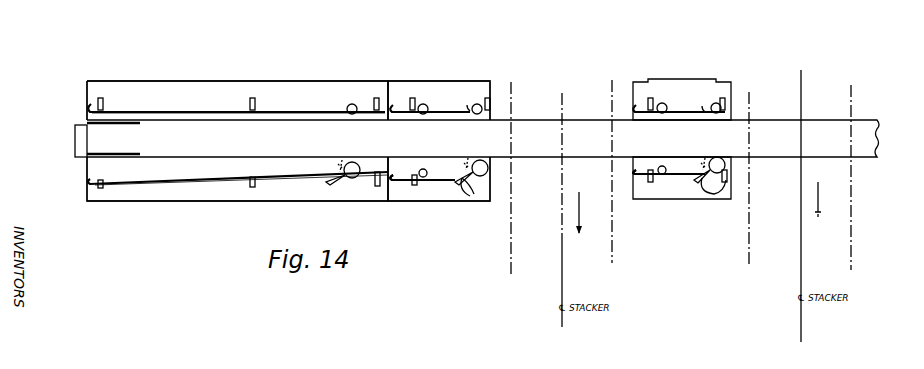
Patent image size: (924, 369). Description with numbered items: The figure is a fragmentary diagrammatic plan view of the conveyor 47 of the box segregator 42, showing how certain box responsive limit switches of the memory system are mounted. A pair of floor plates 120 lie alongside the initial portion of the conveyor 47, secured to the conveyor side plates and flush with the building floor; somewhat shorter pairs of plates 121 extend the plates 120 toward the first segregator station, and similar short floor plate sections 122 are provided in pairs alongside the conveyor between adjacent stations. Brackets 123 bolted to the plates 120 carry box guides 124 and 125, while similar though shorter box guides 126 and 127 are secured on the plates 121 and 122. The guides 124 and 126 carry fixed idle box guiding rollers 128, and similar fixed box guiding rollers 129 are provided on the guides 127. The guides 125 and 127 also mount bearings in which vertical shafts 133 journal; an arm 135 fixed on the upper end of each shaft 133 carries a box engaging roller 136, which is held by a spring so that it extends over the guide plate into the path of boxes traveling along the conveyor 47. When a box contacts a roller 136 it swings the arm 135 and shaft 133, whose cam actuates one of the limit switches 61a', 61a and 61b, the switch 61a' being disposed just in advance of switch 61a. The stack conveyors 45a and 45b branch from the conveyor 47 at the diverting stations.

The box segregator 42 is at (338, 68).
The conveyor 47 is at (523, 119).
The stack conveyor 45a is at (511, 236).
The stack conveyor 45b is at (749, 241).
The floor plate 120 is at (225, 83).
The plate 121 is at (430, 82).
The floor plate section 122 is at (696, 80).
The bracket 123 is at (255, 102).
The box guide 124 is at (196, 111).
The box guide 125 is at (173, 180).
The box guide 126 is at (468, 109).
The box guide 127 is at (427, 171).
The fixed idle box guiding roller 128 is at (350, 104).
The fixed box guiding roller 129 is at (421, 177).
The vertical shaft 133 is at (463, 185).
The arm 135 is at (490, 185).
The box engaging roller 136 is at (349, 178).
The limit switch 61a is at (477, 155).
The limit switch 61a' is at (349, 156).
The limit switch 61b is at (709, 159).